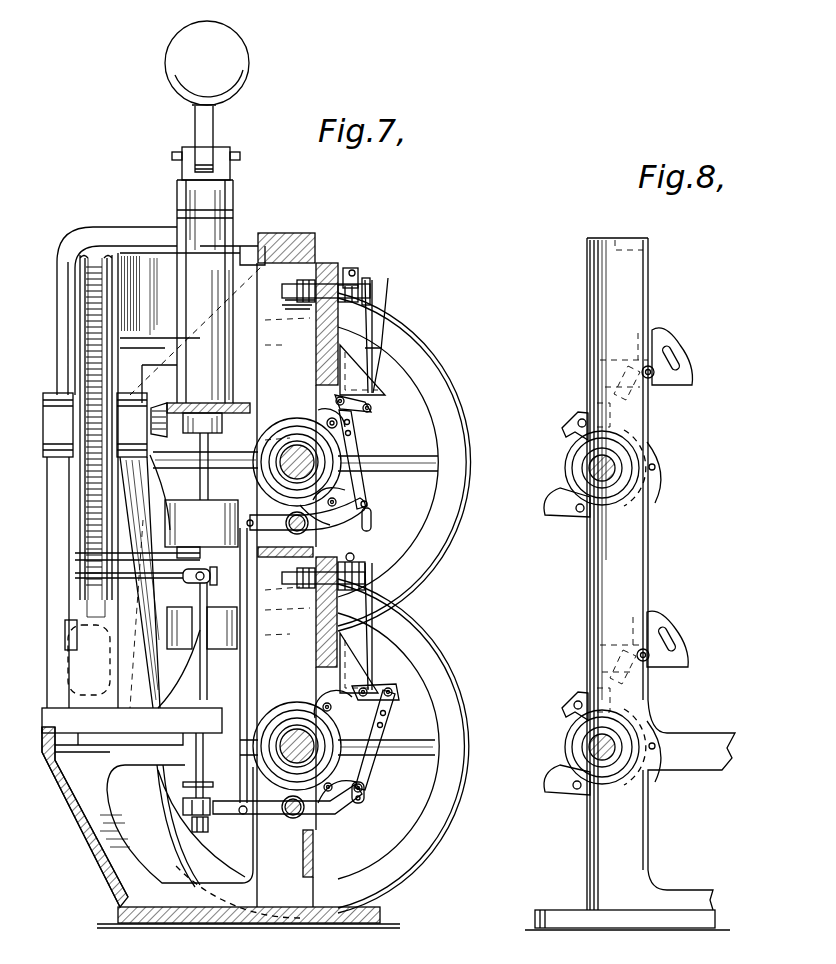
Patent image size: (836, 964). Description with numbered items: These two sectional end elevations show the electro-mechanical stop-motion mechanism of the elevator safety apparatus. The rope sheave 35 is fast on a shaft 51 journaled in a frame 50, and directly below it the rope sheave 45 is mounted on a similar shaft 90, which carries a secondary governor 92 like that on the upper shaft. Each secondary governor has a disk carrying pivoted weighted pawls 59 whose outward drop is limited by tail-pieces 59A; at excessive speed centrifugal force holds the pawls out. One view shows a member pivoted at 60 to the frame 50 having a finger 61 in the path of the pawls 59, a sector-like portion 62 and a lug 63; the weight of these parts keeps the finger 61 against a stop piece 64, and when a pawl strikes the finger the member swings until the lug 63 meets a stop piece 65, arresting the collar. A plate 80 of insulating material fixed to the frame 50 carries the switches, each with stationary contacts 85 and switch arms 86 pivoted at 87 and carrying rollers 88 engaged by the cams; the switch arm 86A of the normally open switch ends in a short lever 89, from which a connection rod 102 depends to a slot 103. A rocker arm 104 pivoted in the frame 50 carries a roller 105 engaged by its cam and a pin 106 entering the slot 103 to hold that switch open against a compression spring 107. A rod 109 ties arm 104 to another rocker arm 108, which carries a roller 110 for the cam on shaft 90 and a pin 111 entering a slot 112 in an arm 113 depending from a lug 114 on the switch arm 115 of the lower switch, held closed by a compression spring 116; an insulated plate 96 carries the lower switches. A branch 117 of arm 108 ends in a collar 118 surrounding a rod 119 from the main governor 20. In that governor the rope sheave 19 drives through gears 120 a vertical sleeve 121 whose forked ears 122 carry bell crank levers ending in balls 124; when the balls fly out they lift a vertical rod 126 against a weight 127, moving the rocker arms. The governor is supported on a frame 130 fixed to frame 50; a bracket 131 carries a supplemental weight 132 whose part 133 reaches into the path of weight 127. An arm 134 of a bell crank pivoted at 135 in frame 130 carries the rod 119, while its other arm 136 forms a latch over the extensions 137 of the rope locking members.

In FIG. 7, the rope sheave 19 is at (95, 330).
In FIG. 7, the main speed governor 20 is at (165, 223).
In FIG. 7, the rope sheave 35 is at (422, 372).
In FIG. 7, the rope sheave 45 is at (440, 690).
In FIG. 7, the frame 50 is at (320, 240).
In FIG. 8, the frame 50 is at (600, 276).
In FIG. 7, the shaft 51 is at (296, 452).
In FIG. 8, the shaft 51 is at (590, 467).
In FIG. 8, the weighted pawls 59 is at (553, 501).
In FIG. 8, the tail-pieces 59A is at (566, 436).
In FIG. 8, the pivot 60 is at (656, 389).
In FIG. 8, the finger 61 is at (625, 393).
In FIG. 8, the sector-like portion 62 is at (692, 381).
In FIG. 8, the lug 63 is at (676, 353).
In FIG. 8, the stop piece 64 is at (625, 375).
In FIG. 8, the stop piece 65 is at (638, 332).
In FIG. 7, the insulating plate 80 is at (340, 263).
In FIG. 7, the stationary contacts 85 is at (359, 280).
In FIG. 7, the switch arms 86 is at (380, 286).
In FIG. 7, the switch arm 86A is at (388, 345).
In FIG. 7, the pivot 87 is at (371, 410).
In FIG. 7, the roller 88 is at (284, 361).
In FIG. 7, the short lever 89 is at (352, 420).
In FIG. 7, the shaft 90 is at (296, 736).
In FIG. 8, the secondary governor 92 is at (550, 751).
In FIG. 7, the insulated plate 96 is at (317, 614).
In FIG. 7, the connection rod 102 is at (360, 488).
In FIG. 7, the slot 103 is at (371, 522).
In FIG. 7, the rocker arm 104 is at (272, 518).
In FIG. 7, the roller 105 is at (340, 528).
In FIG. 7, the pin 106 is at (362, 506).
In FIG. 7, the compression spring 107 is at (348, 400).
In FIG. 7, the rocker arm 108 is at (252, 828).
In FIG. 7, the rod 109 is at (226, 671).
In FIG. 7, the roller 110 is at (327, 806).
In FIG. 7, the pin 111 is at (363, 786).
In FIG. 7, the slot 112 is at (365, 800).
In FIG. 7, the arm 113 is at (380, 736).
In FIG. 7, the lug 114 is at (394, 690).
In FIG. 7, the switch arm 115 is at (373, 660).
In FIG. 7, the compression spring 116 is at (343, 656).
In FIG. 7, the branch 117 is at (176, 826).
In FIG. 7, the collar 118 is at (188, 806).
In FIG. 7, the rod 119 is at (198, 766).
In FIG. 7, the gears 120 is at (172, 425).
In FIG. 7, the vertical sleeve 121 is at (222, 197).
In FIG. 7, the forked ears 122 is at (182, 150).
In FIG. 7, the ball 124 is at (240, 60).
In FIG. 7, the vertical rod 126 is at (160, 581).
In FIG. 7, the weight 127 is at (195, 619).
In FIG. 7, the frame 130 is at (55, 525).
In FIG. 7, the bracket 131 is at (160, 557).
In FIG. 7, the supplemental weight 132 is at (185, 506).
In FIG. 7, the projecting part 133 is at (217, 576).
In FIG. 7, the arm 134 is at (215, 633).
In FIG. 7, the pivot 135 is at (125, 577).
In FIG. 7, the latch arm 136 is at (118, 646).
In FIG. 7, the extensions 137 is at (120, 634).